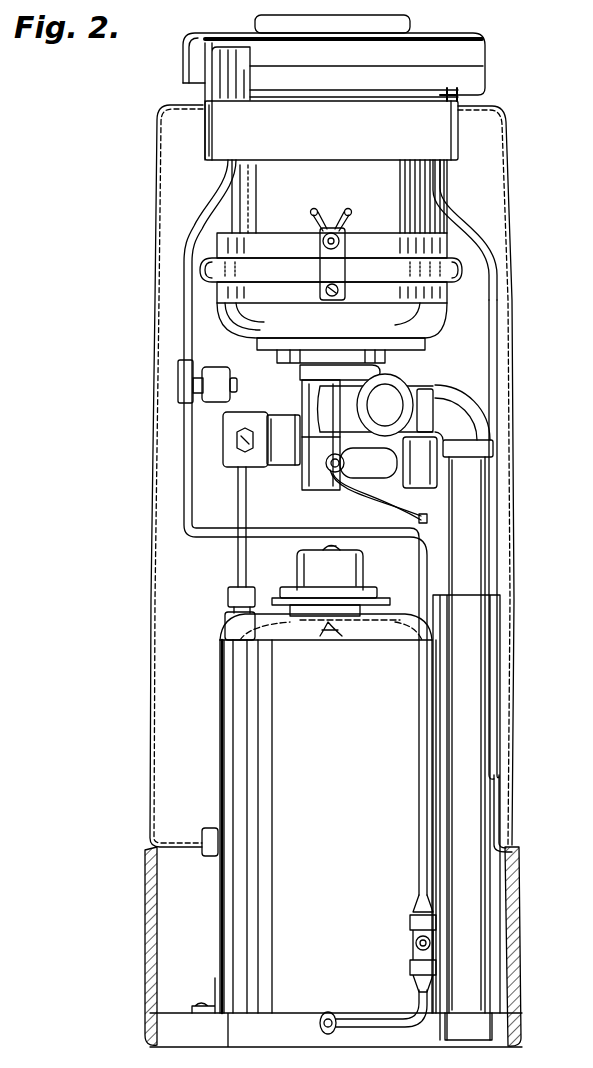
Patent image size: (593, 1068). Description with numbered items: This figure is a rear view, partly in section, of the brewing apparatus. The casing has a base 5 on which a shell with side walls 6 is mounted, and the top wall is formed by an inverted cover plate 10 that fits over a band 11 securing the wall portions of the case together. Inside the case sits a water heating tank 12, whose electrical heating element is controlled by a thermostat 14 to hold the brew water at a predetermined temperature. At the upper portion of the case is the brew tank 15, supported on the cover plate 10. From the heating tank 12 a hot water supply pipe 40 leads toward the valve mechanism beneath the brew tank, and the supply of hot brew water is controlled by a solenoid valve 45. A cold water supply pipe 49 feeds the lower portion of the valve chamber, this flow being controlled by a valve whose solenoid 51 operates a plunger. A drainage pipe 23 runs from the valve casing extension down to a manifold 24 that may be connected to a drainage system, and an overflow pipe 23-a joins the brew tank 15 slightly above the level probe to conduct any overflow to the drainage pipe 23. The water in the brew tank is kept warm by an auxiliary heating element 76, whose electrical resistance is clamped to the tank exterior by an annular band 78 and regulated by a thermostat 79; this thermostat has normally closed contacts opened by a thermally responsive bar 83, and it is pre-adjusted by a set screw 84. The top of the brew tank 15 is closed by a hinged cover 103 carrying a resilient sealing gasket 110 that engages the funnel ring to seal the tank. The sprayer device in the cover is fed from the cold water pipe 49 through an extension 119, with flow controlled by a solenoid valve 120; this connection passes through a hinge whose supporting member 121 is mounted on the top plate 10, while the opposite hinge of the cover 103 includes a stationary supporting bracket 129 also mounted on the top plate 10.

The base 5 is at (147, 895).
The side walls 6 is at (155, 292).
The cover plate 10 is at (312, 122).
The band 11 is at (205, 150).
The water heating tank 12 is at (219, 697).
The thermostat 14 is at (328, 634).
The brew tank 15 is at (447, 190).
The drainage pipe 23 is at (482, 571).
The overflow pipe 23-a is at (498, 336).
The manifold 24 is at (483, 740).
The hot water supply pipe 40 is at (238, 576).
The solenoid valve 45 is at (274, 470).
The cold water supply pipe 49 is at (362, 493).
The solenoid 51 is at (425, 486).
The auxiliary heating element 76 is at (463, 286).
The annular band 78 is at (258, 245).
The thermostat 79 is at (349, 248).
The thermally responsive bar 83 is at (320, 248).
The set screw 84 is at (326, 291).
The cover 103 is at (479, 56).
The sealing gasket 110 is at (387, 96).
The extension 119 is at (184, 258).
The solenoid valve 120 is at (178, 385).
The supporting member 121 is at (205, 93).
The stationary supporting bracket 129 is at (460, 97).